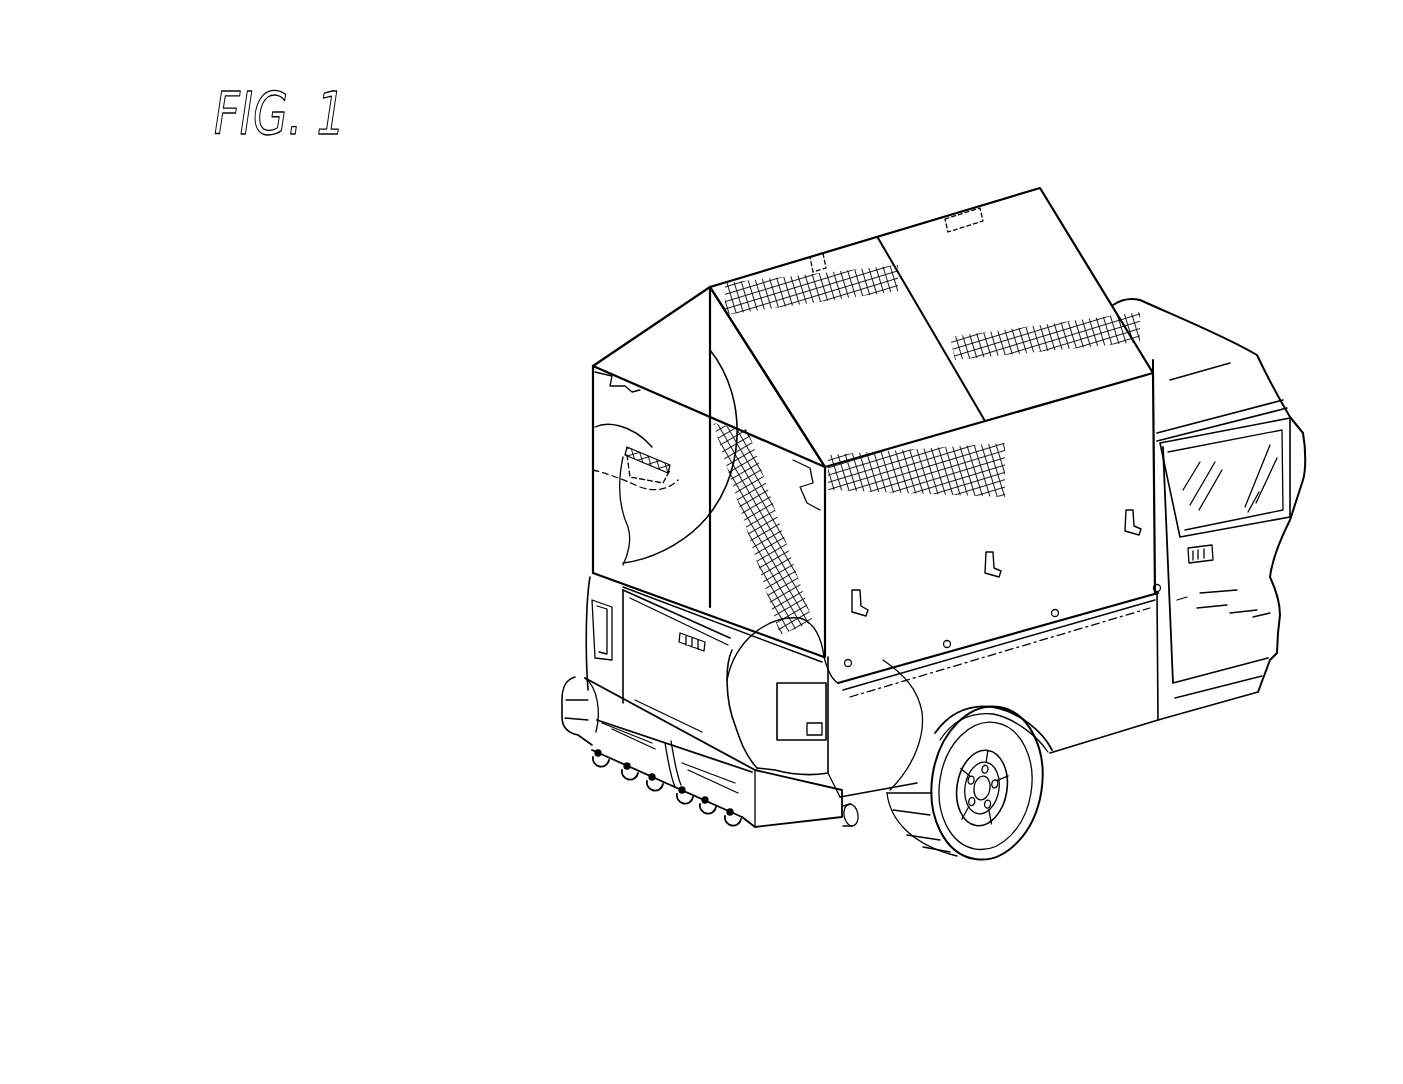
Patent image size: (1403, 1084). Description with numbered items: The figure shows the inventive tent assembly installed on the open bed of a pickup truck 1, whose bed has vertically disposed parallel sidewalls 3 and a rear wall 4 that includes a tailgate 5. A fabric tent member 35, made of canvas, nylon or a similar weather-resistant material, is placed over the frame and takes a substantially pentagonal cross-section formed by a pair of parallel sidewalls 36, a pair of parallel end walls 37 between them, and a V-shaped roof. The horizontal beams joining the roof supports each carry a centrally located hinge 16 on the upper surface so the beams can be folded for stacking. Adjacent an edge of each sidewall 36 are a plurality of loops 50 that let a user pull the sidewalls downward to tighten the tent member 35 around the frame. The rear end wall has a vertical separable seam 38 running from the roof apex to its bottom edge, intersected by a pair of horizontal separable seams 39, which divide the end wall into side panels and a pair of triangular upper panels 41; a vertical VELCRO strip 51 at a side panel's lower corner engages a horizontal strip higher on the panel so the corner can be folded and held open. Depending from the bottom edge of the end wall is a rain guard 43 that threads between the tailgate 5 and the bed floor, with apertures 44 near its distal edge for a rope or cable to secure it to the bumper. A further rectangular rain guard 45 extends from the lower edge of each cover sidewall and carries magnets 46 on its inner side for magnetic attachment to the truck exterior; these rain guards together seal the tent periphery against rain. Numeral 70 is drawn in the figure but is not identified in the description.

The pickup truck 1 is at (1235, 324).
The sidewalls 3 is at (848, 745).
The rear wall 4 is at (656, 801).
The tailgate 5 is at (647, 657).
The hinge 16 is at (813, 253).
The tent member 35 is at (1035, 268).
The sidewalls 36 is at (1130, 408).
The end walls 37 is at (803, 770).
The vertical separable seam 38 is at (596, 575).
The horizontal separable seams 39 is at (645, 392).
The triangular upper panels 41 is at (697, 305).
The rain guard 43 is at (612, 715).
The apertures 44 is at (567, 723).
The rain guard 45 is at (600, 566).
The magnets 46 is at (949, 648).
The loops 50 is at (862, 605).
The vertical VELCRO strip 51 is at (593, 470).
The bumper hooks 70 is at (603, 772).